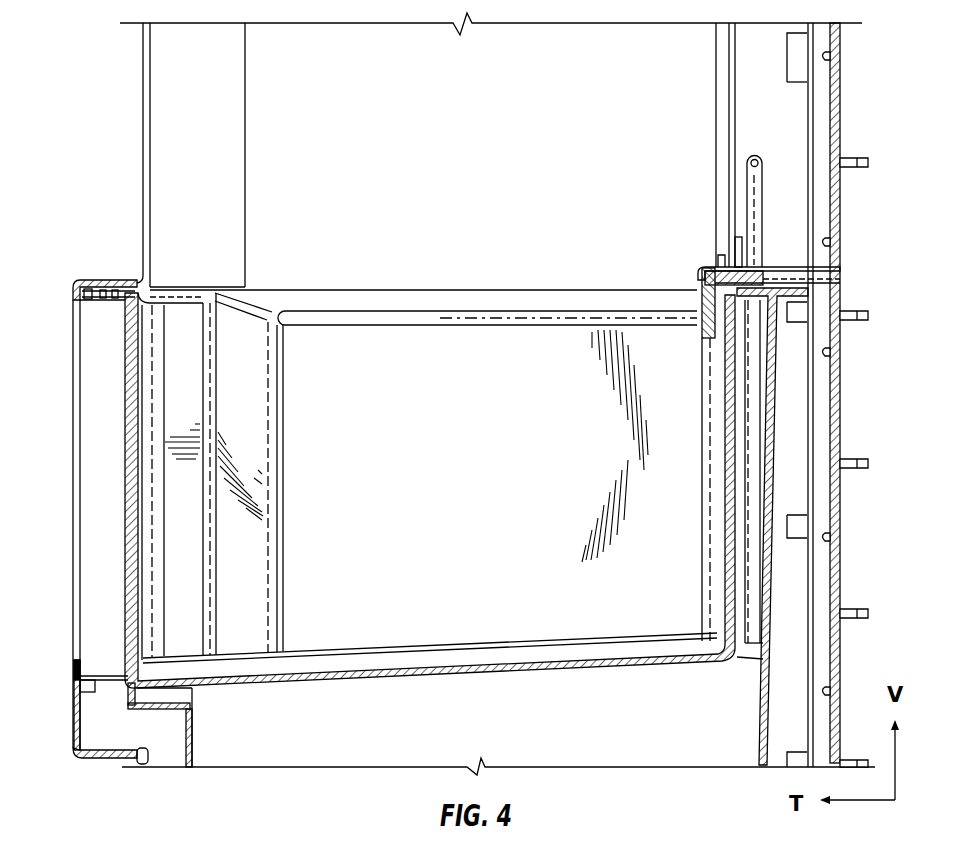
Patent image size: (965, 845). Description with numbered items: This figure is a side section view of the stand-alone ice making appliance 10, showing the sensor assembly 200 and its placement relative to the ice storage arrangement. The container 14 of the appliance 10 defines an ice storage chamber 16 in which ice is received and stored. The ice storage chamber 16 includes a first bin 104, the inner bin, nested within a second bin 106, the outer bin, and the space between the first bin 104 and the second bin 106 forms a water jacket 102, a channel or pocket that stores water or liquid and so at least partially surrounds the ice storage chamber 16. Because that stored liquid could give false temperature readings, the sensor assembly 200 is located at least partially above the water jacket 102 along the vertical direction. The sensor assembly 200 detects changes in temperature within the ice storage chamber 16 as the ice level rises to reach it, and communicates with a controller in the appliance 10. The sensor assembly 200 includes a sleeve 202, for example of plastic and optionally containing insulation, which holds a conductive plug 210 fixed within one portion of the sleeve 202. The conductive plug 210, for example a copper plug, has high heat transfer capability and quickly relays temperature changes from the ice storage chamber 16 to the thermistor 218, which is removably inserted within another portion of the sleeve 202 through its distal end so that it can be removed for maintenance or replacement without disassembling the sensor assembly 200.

The stand-alone ice making appliance 10 is at (111, 98).
The container 14 is at (402, 357).
The ice storage chamber 16 is at (487, 501).
The water jacket 102 is at (104, 476).
The first bin 104 is at (133, 287).
The second bin 106 is at (73, 630).
The sensor assembly 200 is at (681, 224).
The sleeve 202 is at (783, 263).
The conductive plug 210 is at (713, 332).
The thermistor 218 is at (767, 276).